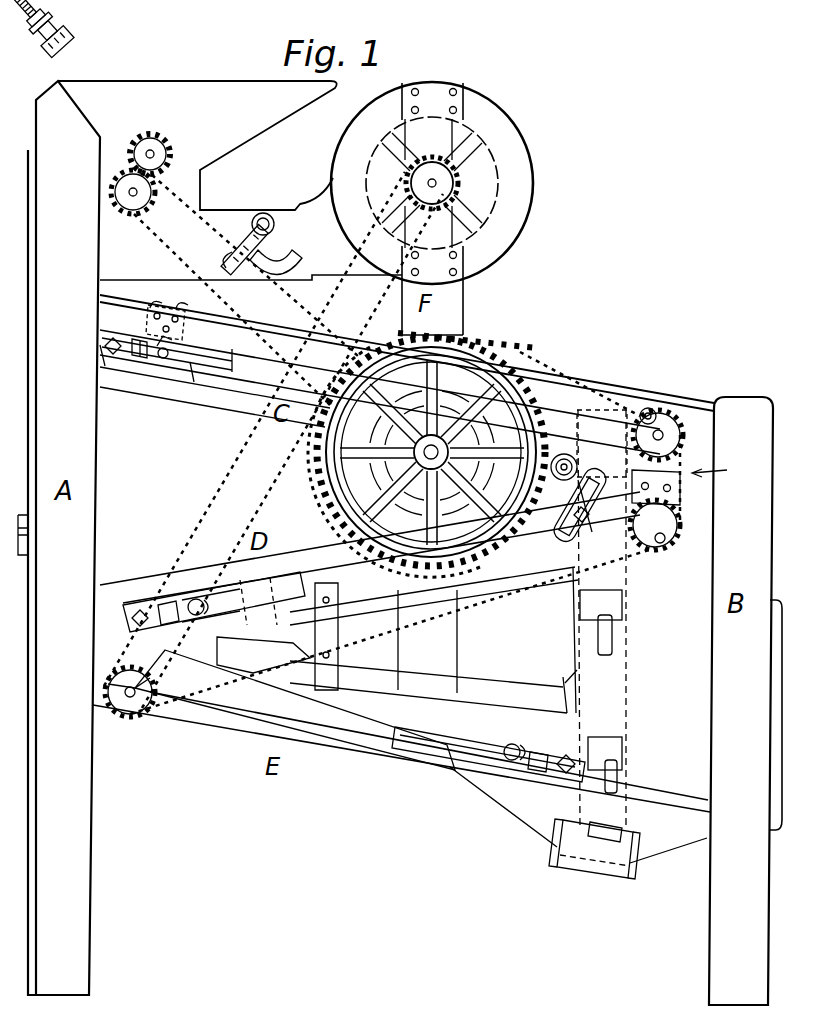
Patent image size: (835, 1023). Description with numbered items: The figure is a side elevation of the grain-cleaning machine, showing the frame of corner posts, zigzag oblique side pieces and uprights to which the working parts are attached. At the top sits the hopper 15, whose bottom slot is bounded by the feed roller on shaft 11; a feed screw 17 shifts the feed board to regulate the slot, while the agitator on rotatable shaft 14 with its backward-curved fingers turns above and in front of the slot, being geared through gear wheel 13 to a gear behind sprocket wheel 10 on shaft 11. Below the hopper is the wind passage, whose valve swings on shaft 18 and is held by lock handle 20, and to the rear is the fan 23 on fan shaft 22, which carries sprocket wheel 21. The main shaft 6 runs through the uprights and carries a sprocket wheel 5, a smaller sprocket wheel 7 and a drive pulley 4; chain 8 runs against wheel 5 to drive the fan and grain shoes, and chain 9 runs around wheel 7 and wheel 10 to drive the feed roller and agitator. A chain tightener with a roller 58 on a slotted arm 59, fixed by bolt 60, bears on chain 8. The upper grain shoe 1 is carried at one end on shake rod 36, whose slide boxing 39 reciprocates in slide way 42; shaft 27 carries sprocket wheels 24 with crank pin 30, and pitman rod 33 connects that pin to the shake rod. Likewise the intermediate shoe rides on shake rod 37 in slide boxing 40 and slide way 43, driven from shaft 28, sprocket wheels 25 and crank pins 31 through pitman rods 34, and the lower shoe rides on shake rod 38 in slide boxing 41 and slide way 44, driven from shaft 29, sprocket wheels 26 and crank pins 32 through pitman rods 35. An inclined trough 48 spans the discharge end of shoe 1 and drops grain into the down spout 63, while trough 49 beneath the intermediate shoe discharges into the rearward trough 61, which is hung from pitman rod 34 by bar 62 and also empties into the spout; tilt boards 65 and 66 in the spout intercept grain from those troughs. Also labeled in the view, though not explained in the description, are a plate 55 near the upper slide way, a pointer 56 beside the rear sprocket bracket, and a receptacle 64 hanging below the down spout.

The upper grain shoe 1 is at (570, 385).
The drive pulley 4 is at (480, 378).
The sprocket wheel 5 is at (462, 345).
The main shaft 6 is at (470, 420).
The smaller sprocket wheel 7 is at (440, 455).
The chain 8 is at (240, 460).
The chain 9 is at (330, 338).
The sprocket wheel 10 is at (150, 203).
The feed roller shaft 11 is at (131, 196).
The gear wheel 13 is at (152, 142).
The agitator shaft 14 is at (154, 152).
The hopper 15 is at (102, 94).
The feed screw 17 is at (48, 50).
The valve shaft 18 is at (272, 223).
The lock handle 20 is at (247, 244).
The sprocket wheel 21 is at (455, 182).
The fan shaft 22 is at (433, 162).
The fan 23 is at (398, 168).
The sprocket wheels 24 is at (672, 450).
The sprocket wheels 25 is at (681, 500).
The sprocket wheels 26 is at (158, 710).
The shaft 27 is at (664, 436).
The shaft 28 is at (665, 520).
The shaft 29 is at (132, 698).
The crank pin 30 is at (652, 412).
The crank pins 31 is at (666, 538).
The crank pins 32 is at (118, 712).
The pitman rod 33 is at (600, 410).
The pitman rods 34 is at (295, 585).
The pitman rods 35 is at (375, 738).
The shake rod 36 is at (170, 360).
The shake rod 37 is at (200, 600).
The shake rod 38 is at (510, 758).
The slide boxing 39 is at (145, 362).
The slide boxing 40 is at (168, 626).
The slide boxing 41 is at (535, 762).
The slide way 42 is at (127, 358).
The slide way 43 is at (136, 605).
The slide way 44 is at (560, 770).
The trough 48 is at (582, 488).
The trough 49 is at (300, 640).
The plate 55 is at (183, 307).
The pointer 56 is at (721, 472).
The roller 58 is at (565, 455).
The slotted arm 59 is at (590, 505).
The bolt 60 is at (590, 516).
The trough 61 is at (510, 678).
The bar 62 is at (350, 624).
The down spout 63 is at (628, 668).
The bucket 64 is at (585, 866).
The tilt board 65 is at (624, 602).
The tilt board 66 is at (623, 750).